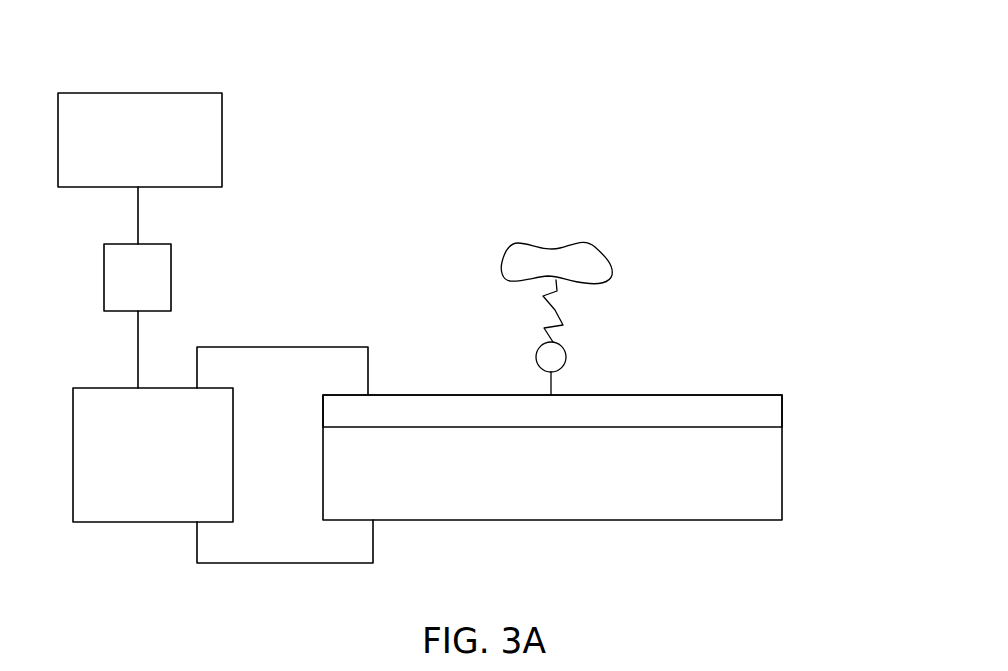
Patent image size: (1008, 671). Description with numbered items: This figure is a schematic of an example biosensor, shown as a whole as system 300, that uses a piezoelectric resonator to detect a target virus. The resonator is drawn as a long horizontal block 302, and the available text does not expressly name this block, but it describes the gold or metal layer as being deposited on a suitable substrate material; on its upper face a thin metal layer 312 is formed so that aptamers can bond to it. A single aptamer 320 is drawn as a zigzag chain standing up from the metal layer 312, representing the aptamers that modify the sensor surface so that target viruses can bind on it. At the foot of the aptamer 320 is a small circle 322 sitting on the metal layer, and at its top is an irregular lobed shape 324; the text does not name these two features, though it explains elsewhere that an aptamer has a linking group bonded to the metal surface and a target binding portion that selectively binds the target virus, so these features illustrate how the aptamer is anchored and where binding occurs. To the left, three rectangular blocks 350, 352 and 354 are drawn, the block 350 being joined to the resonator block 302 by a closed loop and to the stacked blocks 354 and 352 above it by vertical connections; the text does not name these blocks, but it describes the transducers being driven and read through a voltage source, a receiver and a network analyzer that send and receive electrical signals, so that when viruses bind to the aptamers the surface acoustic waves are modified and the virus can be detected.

The substrate processing system 300 is at (360, 56).
The substrate 302 is at (713, 512).
The metal layer 312 is at (702, 400).
The aptamers 320 is at (563, 308).
The particle 322 is at (540, 357).
The target molecule 324 is at (612, 262).
The controller 350 is at (153, 455).
The processor 352 is at (140, 140).
The memory 354 is at (137, 277).